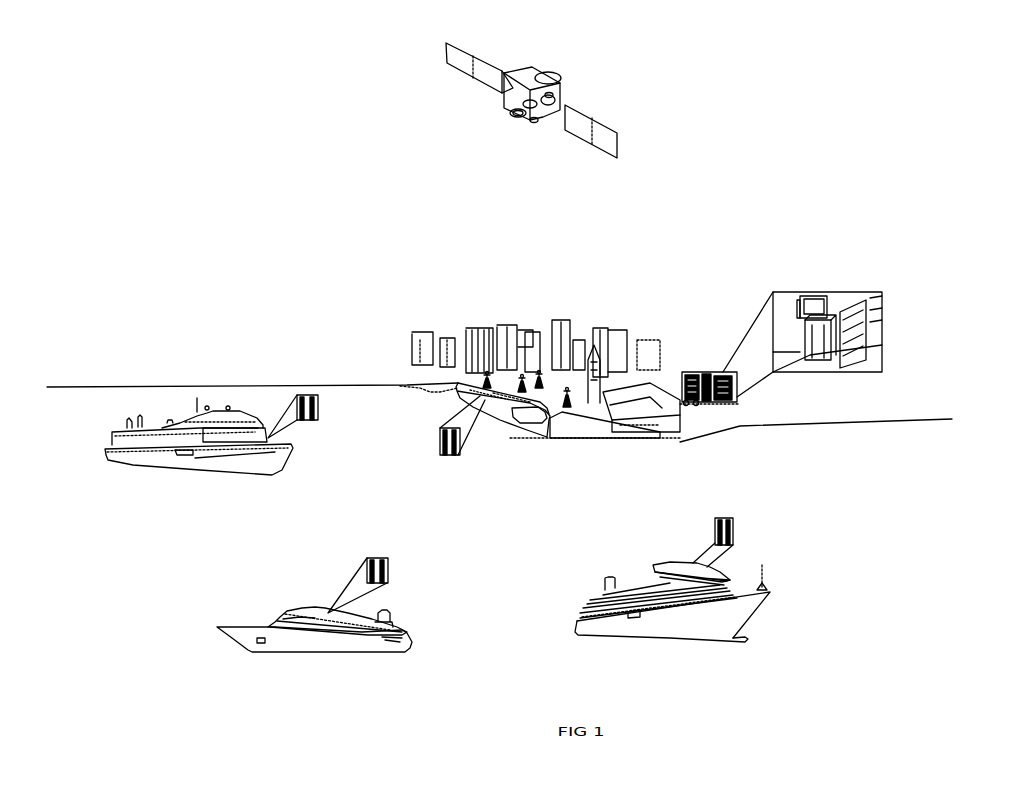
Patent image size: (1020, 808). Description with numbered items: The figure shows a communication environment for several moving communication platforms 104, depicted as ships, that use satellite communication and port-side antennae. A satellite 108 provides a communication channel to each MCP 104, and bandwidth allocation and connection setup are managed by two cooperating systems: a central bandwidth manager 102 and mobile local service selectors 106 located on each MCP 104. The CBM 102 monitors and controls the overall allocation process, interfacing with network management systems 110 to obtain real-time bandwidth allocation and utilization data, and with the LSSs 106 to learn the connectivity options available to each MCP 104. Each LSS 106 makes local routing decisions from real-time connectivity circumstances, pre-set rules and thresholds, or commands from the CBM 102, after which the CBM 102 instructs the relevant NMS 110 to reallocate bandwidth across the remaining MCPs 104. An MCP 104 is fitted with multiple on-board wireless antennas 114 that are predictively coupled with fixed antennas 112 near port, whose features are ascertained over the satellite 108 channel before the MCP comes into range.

The central bandwidth manager 102 is at (877, 320).
The moving communication platform 104 is at (533, 432).
The local service selector 106 is at (460, 455).
The satellite 108 is at (523, 121).
The network management system 110 is at (782, 337).
The fixed antennas 112 is at (539, 372).
The on-board wireless antennas 114 is at (479, 376).